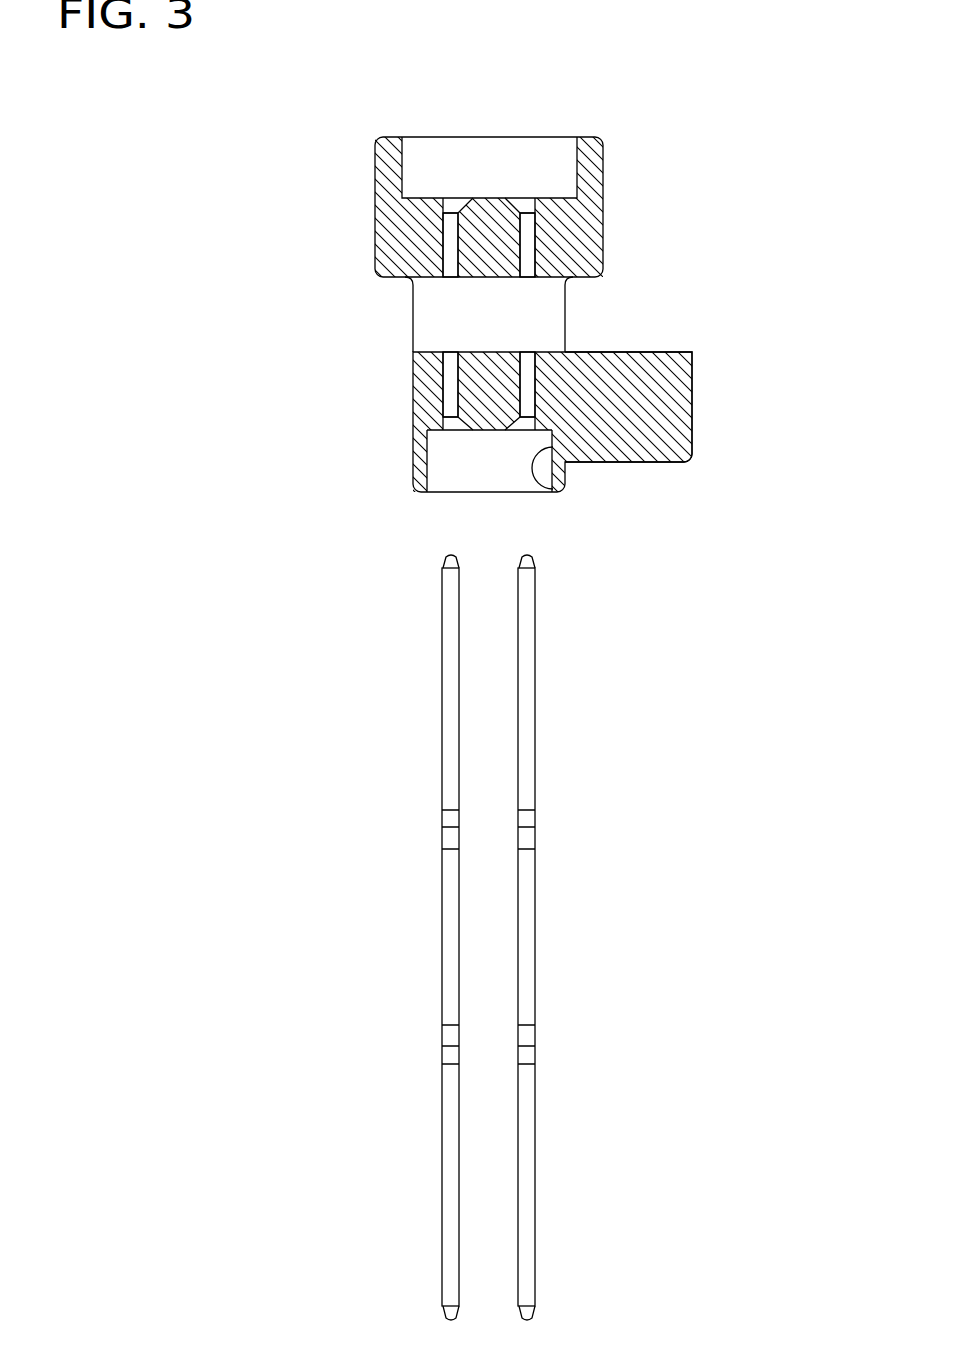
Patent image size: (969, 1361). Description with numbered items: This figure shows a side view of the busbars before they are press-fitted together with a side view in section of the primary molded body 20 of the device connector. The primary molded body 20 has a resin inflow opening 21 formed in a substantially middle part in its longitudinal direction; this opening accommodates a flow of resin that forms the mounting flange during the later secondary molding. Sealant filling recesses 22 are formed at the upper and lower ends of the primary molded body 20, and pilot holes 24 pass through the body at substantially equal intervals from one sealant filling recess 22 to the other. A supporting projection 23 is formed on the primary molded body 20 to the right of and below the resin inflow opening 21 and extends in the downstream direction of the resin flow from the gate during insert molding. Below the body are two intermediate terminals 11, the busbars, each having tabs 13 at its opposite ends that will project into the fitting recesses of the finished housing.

The primary molded body 20 is at (333, 190).
The resin inflow opening 21 is at (533, 302).
The sealant filling recess 22 is at (577, 157).
The supporting projection 23 is at (638, 403).
The pilot hole 24 is at (455, 213).
The intermediate terminal 11 is at (451, 874).
The tab 13 is at (447, 562).